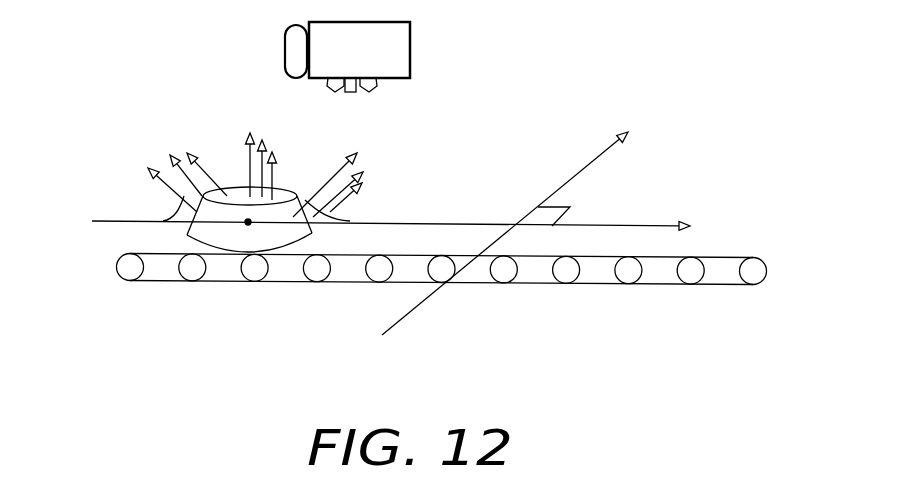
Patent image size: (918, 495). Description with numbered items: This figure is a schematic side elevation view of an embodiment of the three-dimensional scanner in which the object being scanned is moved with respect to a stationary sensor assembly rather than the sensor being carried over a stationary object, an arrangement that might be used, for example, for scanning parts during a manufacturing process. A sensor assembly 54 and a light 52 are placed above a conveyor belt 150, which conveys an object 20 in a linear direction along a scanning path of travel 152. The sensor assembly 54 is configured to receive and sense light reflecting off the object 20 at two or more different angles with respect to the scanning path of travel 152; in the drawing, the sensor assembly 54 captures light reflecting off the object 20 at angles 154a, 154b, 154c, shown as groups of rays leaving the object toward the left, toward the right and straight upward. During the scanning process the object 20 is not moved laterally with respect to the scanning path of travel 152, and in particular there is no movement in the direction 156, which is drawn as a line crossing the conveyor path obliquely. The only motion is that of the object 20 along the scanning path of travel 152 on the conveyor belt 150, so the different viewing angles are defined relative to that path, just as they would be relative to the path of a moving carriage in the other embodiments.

The light 52 is at (297, 50).
The sensor assembly 54 is at (402, 53).
The object 20 is at (232, 235).
The angle 154a is at (165, 204).
The angle 154b is at (340, 204).
The angle 154c is at (282, 195).
The direction 156 is at (578, 173).
The scanning path of travel 152 is at (648, 224).
The conveyor belt 150 is at (662, 273).